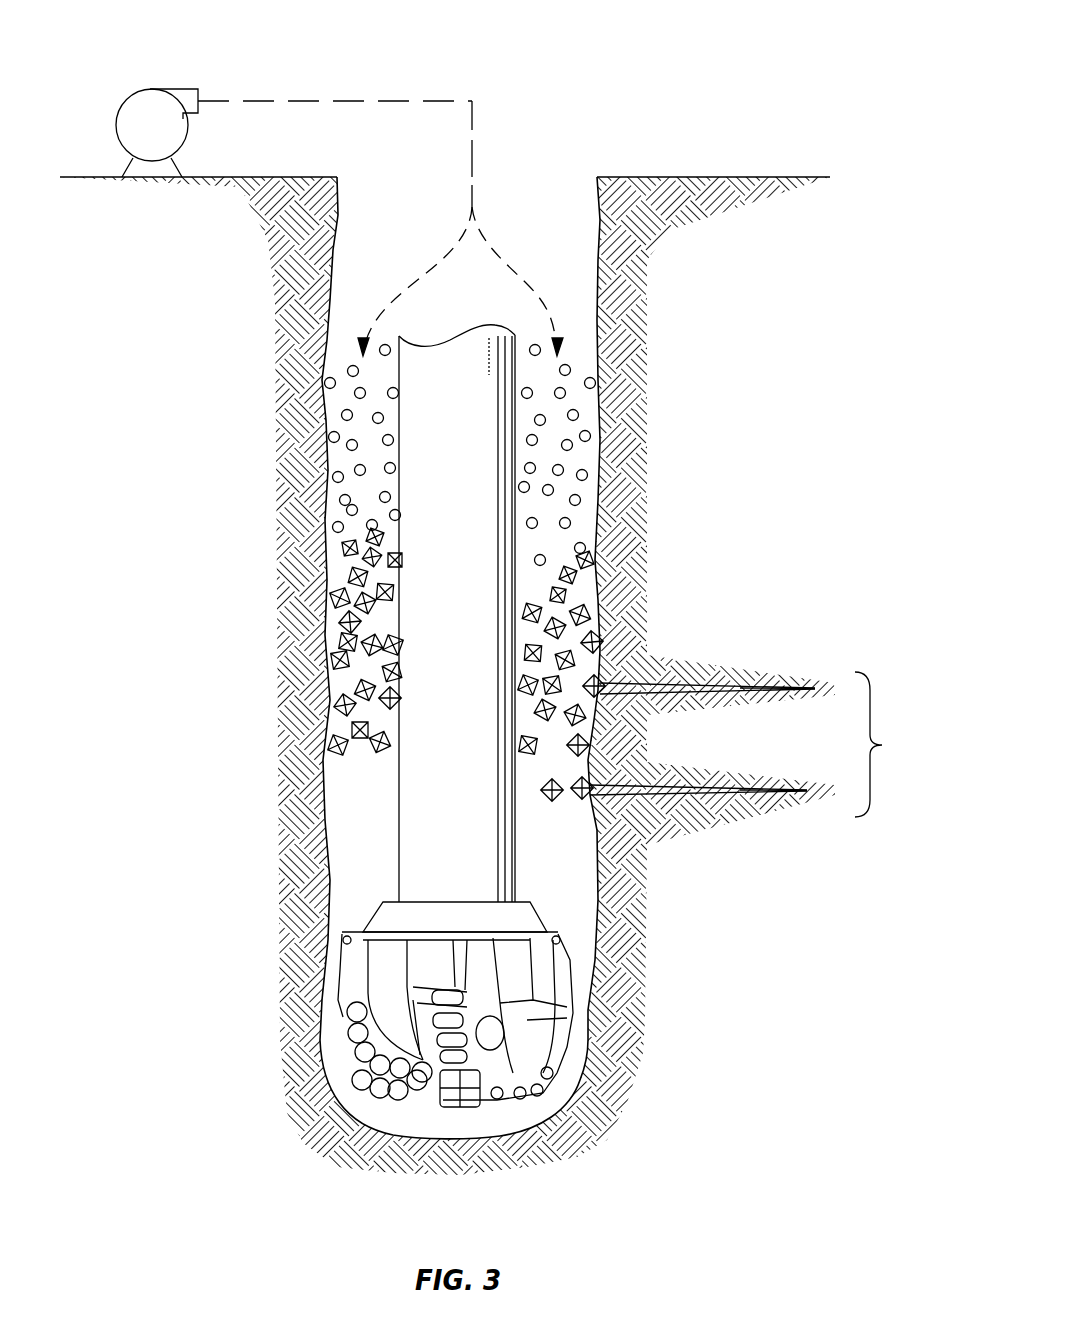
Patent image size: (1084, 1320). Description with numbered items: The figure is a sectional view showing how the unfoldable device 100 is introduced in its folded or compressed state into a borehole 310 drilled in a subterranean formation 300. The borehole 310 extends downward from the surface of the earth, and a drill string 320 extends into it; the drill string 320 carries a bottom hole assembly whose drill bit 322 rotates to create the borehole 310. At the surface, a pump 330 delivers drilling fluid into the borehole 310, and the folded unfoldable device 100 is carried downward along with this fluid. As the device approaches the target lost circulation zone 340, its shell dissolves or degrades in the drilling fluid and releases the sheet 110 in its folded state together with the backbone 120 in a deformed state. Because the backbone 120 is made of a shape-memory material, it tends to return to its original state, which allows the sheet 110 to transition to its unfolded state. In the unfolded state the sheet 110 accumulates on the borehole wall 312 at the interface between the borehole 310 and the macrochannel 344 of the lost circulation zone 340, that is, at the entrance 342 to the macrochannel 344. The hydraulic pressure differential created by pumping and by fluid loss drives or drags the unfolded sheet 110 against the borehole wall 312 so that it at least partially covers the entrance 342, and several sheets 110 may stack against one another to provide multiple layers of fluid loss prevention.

The subterranean formation 300 is at (813, 58).
The borehole 310 is at (260, 368).
The borehole wall 312 is at (325, 632).
The drill string 320 is at (399, 830).
The drill bit 322 is at (355, 1050).
The pump 330 is at (152, 89).
The target lost circulation zone 340 is at (893, 744).
The entrance 342 is at (625, 683).
The macrochannel 344 is at (760, 684).
The unfoldable device 100 is at (585, 436).
The sheet 110 is at (592, 737).
The backbone 120 is at (590, 745).